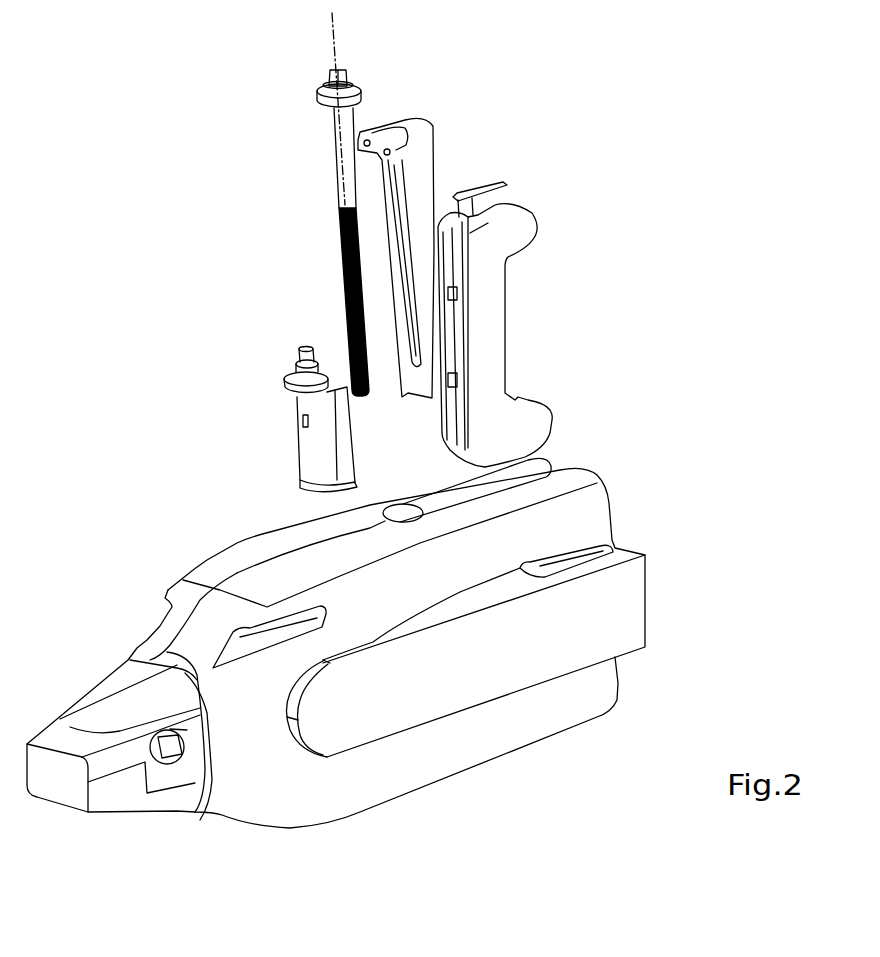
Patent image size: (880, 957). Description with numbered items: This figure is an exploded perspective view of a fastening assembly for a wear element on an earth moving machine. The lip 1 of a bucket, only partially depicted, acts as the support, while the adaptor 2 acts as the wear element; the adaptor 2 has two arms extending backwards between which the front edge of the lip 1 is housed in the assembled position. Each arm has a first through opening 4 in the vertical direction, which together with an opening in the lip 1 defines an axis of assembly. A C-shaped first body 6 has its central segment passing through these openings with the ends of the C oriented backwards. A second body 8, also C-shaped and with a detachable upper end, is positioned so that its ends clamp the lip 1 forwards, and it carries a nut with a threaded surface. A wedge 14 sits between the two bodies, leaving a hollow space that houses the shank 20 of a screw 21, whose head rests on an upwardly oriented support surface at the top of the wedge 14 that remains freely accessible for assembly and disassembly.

The lip 1 is at (552, 652).
The adaptor 2 is at (387, 767).
The first through opening 4 is at (530, 473).
The first body 6 is at (515, 233).
The second body 8 is at (322, 433).
The wedge 14 is at (427, 165).
The shank 20 is at (343, 175).
The screw 21 is at (337, 137).